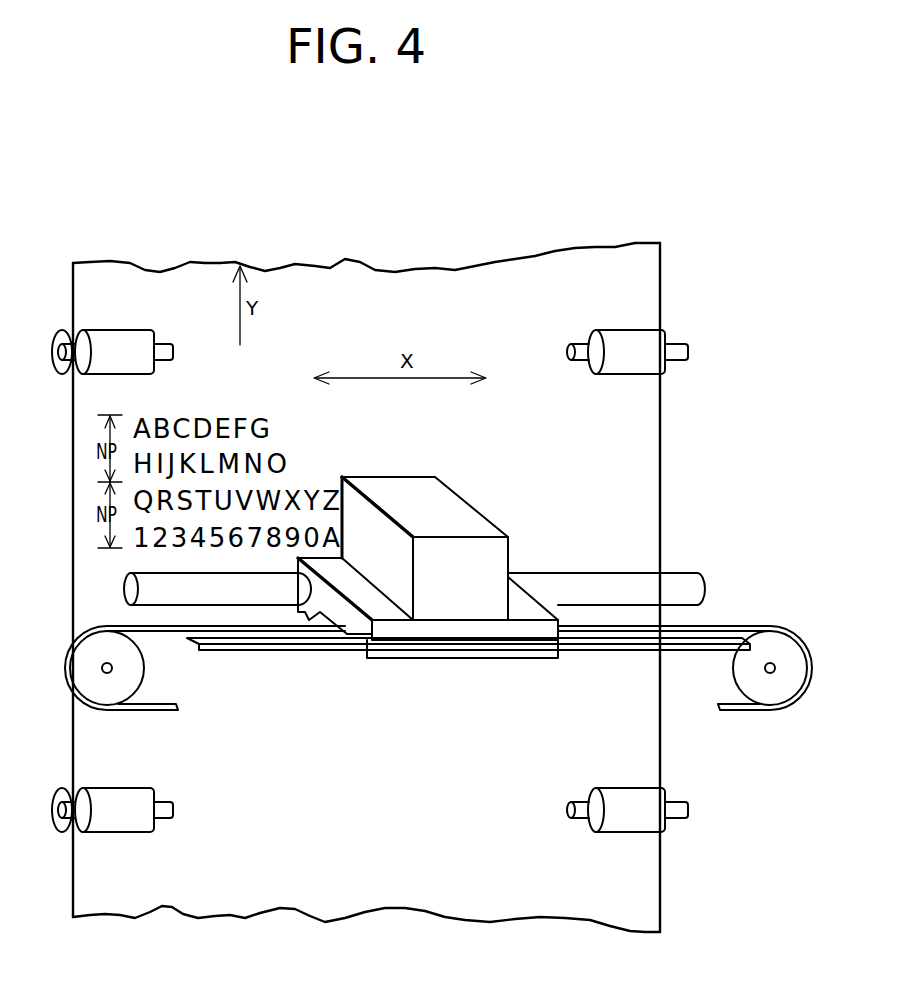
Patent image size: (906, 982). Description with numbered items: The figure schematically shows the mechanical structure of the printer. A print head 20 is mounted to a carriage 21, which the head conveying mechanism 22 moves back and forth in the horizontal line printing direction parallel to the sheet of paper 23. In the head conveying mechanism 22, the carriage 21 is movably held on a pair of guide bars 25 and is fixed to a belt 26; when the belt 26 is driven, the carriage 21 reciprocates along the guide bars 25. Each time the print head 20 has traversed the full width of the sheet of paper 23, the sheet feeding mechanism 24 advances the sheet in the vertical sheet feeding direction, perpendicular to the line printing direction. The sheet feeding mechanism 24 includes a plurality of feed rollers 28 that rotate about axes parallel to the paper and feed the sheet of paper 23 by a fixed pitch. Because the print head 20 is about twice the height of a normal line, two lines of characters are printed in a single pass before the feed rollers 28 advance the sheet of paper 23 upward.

The print head 20 is at (400, 484).
The carriage 21 is at (522, 602).
The head conveying mechanism 22 is at (739, 605).
The sheet of paper 23 is at (456, 284).
The sheet feeding mechanism 24 is at (682, 790).
The guide bars 25 is at (680, 578).
The belt 26 is at (160, 636).
The feed rollers 28 is at (122, 339).